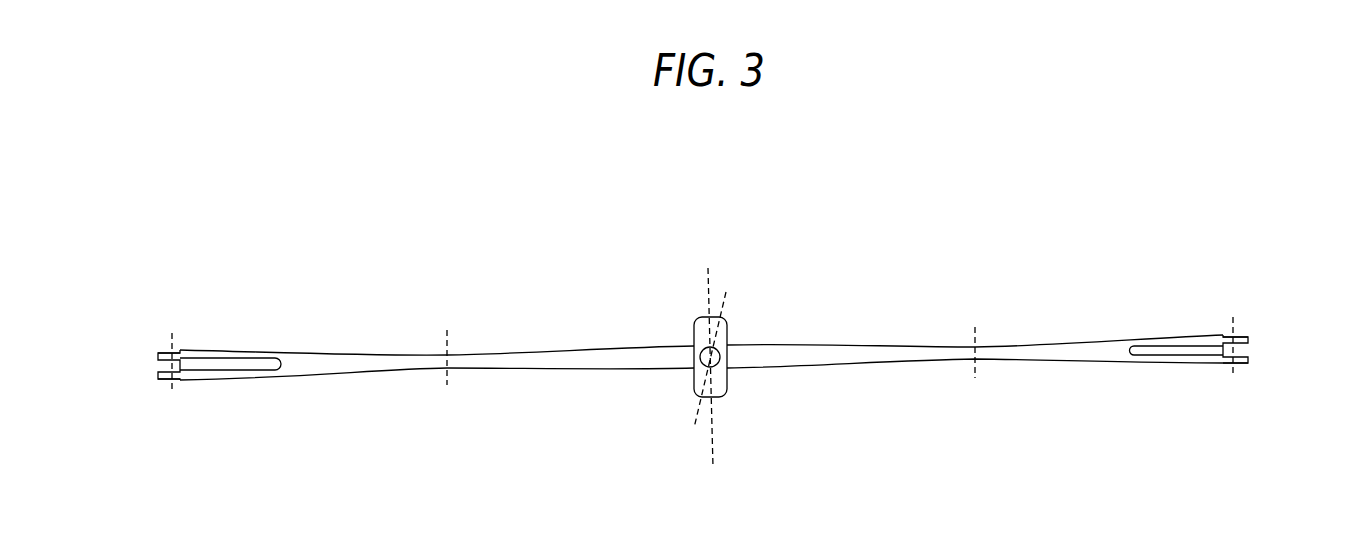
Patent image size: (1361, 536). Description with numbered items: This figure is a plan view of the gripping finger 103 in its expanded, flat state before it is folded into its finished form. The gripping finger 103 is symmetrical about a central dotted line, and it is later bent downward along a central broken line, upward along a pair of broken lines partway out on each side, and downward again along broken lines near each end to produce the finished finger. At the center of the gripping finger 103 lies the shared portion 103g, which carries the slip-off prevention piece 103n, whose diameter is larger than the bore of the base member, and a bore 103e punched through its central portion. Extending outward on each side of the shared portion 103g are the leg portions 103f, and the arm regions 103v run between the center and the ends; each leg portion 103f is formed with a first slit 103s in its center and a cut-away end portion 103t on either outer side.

The gripping finger 103 is at (704, 333).
The slit 103s is at (158, 366).
The cut-away end portion 103t is at (165, 385).
The leg portion 103f is at (268, 352).
The arm portion 103v is at (582, 347).
The shared portion 103g is at (700, 317).
The slip-off prevention piece 103n is at (723, 387).
The bore 103e is at (697, 365).